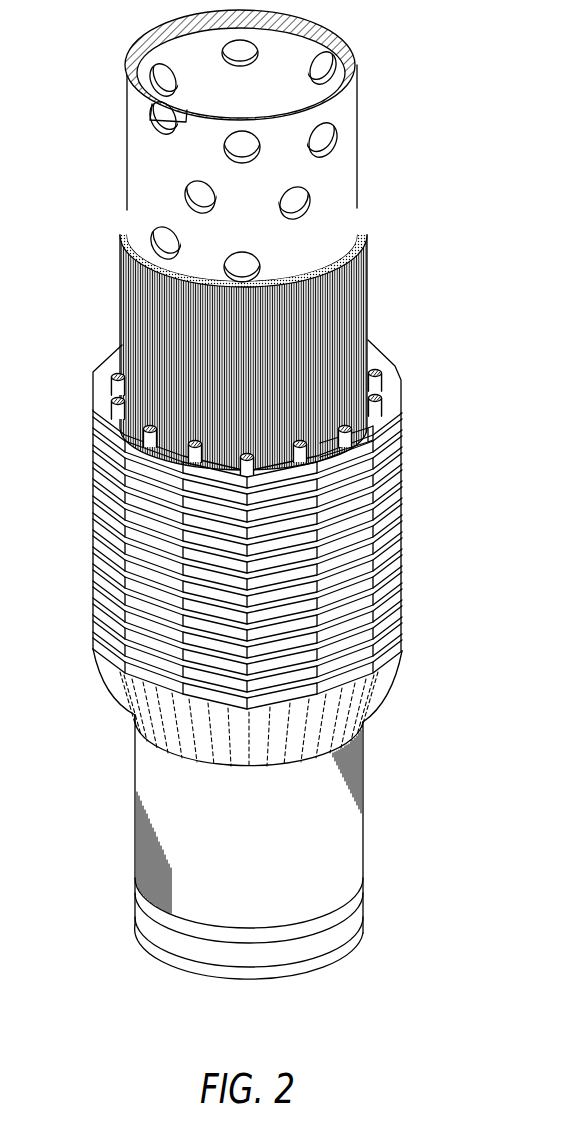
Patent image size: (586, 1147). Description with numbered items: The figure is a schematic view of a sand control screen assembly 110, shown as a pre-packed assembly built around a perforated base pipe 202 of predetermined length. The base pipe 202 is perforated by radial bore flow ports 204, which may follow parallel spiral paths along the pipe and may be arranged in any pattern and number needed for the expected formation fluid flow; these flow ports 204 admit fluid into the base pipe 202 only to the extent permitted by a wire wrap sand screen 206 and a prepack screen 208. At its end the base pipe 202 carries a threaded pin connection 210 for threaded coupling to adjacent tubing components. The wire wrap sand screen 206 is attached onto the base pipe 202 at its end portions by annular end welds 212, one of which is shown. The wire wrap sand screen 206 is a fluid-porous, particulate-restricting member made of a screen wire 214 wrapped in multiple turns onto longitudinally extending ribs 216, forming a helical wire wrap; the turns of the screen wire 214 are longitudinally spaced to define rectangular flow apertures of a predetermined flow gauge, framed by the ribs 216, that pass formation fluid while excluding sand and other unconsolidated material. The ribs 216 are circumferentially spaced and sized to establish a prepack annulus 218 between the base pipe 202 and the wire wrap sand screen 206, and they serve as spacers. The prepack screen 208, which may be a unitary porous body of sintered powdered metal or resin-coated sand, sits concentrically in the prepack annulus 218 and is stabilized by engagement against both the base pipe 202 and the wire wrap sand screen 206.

The sand control screen assembly 110 is at (414, 246).
The perforated base pipe 202 is at (154, 176).
The radial bore flow ports 204 is at (207, 188).
The wire wrap sand screen 206 is at (403, 589).
The prepack screen 208 is at (119, 321).
The threaded pin connection 210 is at (356, 905).
The annular end welds 212 is at (135, 713).
The screen wire 214 is at (388, 396).
The longitudinally extending ribs 216 is at (110, 406).
The prepack annulus 218 is at (356, 414).